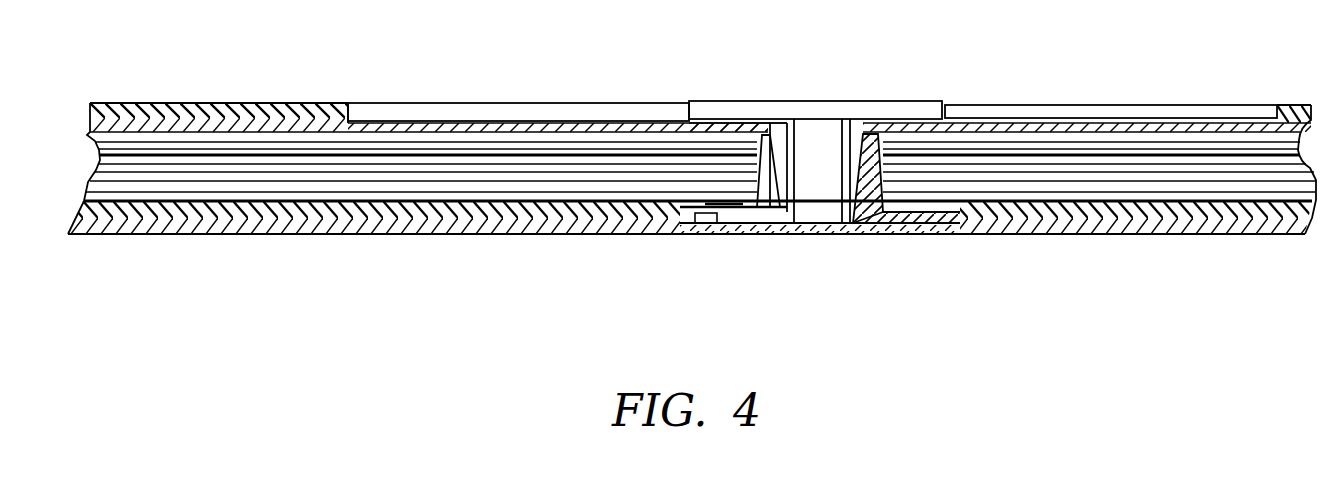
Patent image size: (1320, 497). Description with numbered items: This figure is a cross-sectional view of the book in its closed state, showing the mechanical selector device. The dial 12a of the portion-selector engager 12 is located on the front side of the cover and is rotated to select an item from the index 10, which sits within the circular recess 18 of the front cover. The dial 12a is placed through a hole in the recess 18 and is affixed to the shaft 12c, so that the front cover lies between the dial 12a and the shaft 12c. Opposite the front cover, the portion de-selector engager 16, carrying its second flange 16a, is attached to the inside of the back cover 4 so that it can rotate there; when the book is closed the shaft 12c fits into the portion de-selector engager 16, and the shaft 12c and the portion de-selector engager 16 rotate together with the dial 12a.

The back cover 4 is at (279, 230).
The index 10 is at (488, 112).
The portion-selector engager 12 is at (237, 103).
The dial 12a is at (718, 101).
The shaft 12c is at (831, 101).
The portion de-selector engager 16 is at (748, 218).
The second flange 16a is at (762, 142).
The circular recess 18 is at (1062, 105).